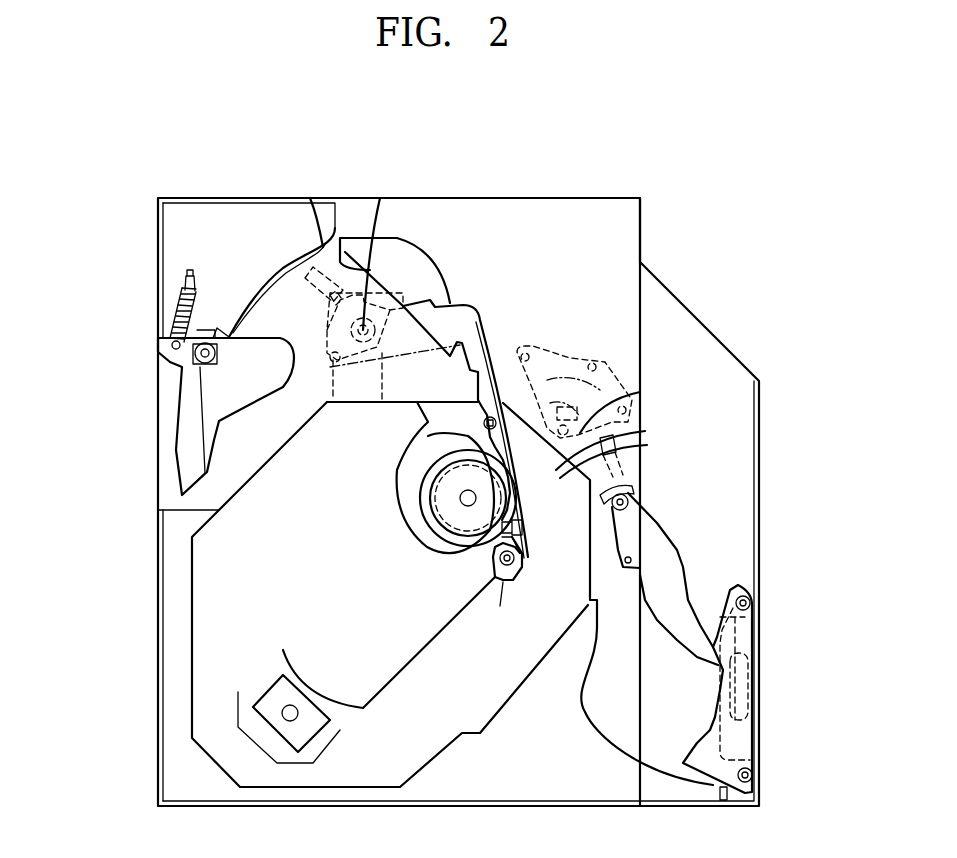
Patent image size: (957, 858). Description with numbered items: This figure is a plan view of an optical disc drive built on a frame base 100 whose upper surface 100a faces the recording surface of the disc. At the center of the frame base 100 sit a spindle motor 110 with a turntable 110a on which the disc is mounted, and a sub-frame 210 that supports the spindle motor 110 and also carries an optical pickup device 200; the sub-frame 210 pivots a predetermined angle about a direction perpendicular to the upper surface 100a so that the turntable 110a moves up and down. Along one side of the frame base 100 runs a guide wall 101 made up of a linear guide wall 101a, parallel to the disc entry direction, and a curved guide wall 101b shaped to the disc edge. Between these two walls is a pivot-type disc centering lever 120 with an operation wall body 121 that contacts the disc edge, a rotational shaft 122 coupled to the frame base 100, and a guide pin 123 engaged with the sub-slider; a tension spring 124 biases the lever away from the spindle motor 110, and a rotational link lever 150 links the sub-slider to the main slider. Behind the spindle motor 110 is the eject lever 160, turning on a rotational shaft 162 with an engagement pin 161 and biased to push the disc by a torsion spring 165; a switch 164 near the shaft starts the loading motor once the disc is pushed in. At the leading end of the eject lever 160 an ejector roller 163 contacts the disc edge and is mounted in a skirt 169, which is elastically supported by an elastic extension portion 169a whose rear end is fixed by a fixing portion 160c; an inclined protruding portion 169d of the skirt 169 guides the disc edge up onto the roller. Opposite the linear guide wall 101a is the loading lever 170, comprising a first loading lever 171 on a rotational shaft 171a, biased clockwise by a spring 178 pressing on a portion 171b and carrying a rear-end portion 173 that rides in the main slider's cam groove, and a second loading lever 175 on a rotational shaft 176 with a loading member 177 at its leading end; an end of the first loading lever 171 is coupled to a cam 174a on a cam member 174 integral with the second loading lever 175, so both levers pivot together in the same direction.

The frame base 100 is at (652, 172).
The upper surface 100a is at (602, 245).
The guide wall 101 is at (70, 260).
The linear guide wall 101a is at (163, 547).
The curved guide wall 101b is at (282, 266).
The spindle motor 110 is at (420, 498).
The turntable 110a is at (447, 517).
The disc centering lever 120 is at (210, 395).
The operation wall body 121 is at (180, 453).
The rotational shaft 122 is at (188, 353).
The guide pin 123 is at (281, 368).
The tension spring 124 is at (177, 317).
The rotational link lever 150 is at (566, 357).
The eject lever 160 is at (474, 310).
The fixing portion 160c is at (522, 524).
The engagement pin 161 is at (336, 362).
The rotational shaft 162 is at (378, 195).
The ejector roller 163 is at (500, 563).
The switch 164 is at (313, 198).
The torsion spring 165 is at (380, 352).
The skirt 169 is at (521, 584).
The elastic extension portion 169a is at (518, 538).
The protruding portion 169d is at (503, 584).
The loading lever 170 is at (830, 533).
The first loading lever 171 is at (678, 570).
The rotational shaft 171a is at (632, 494).
The portion 171b is at (616, 437).
The rear-end portion 173 is at (627, 568).
The cam member 174 is at (720, 739).
The cam 174a is at (744, 702).
The second loading lever 175 is at (725, 636).
The rotational shaft 176 is at (752, 603).
The loading member 177 is at (752, 776).
The spring 178 is at (646, 385).
The optical pickup device 200 is at (308, 690).
The sub-frame 210 is at (493, 697).